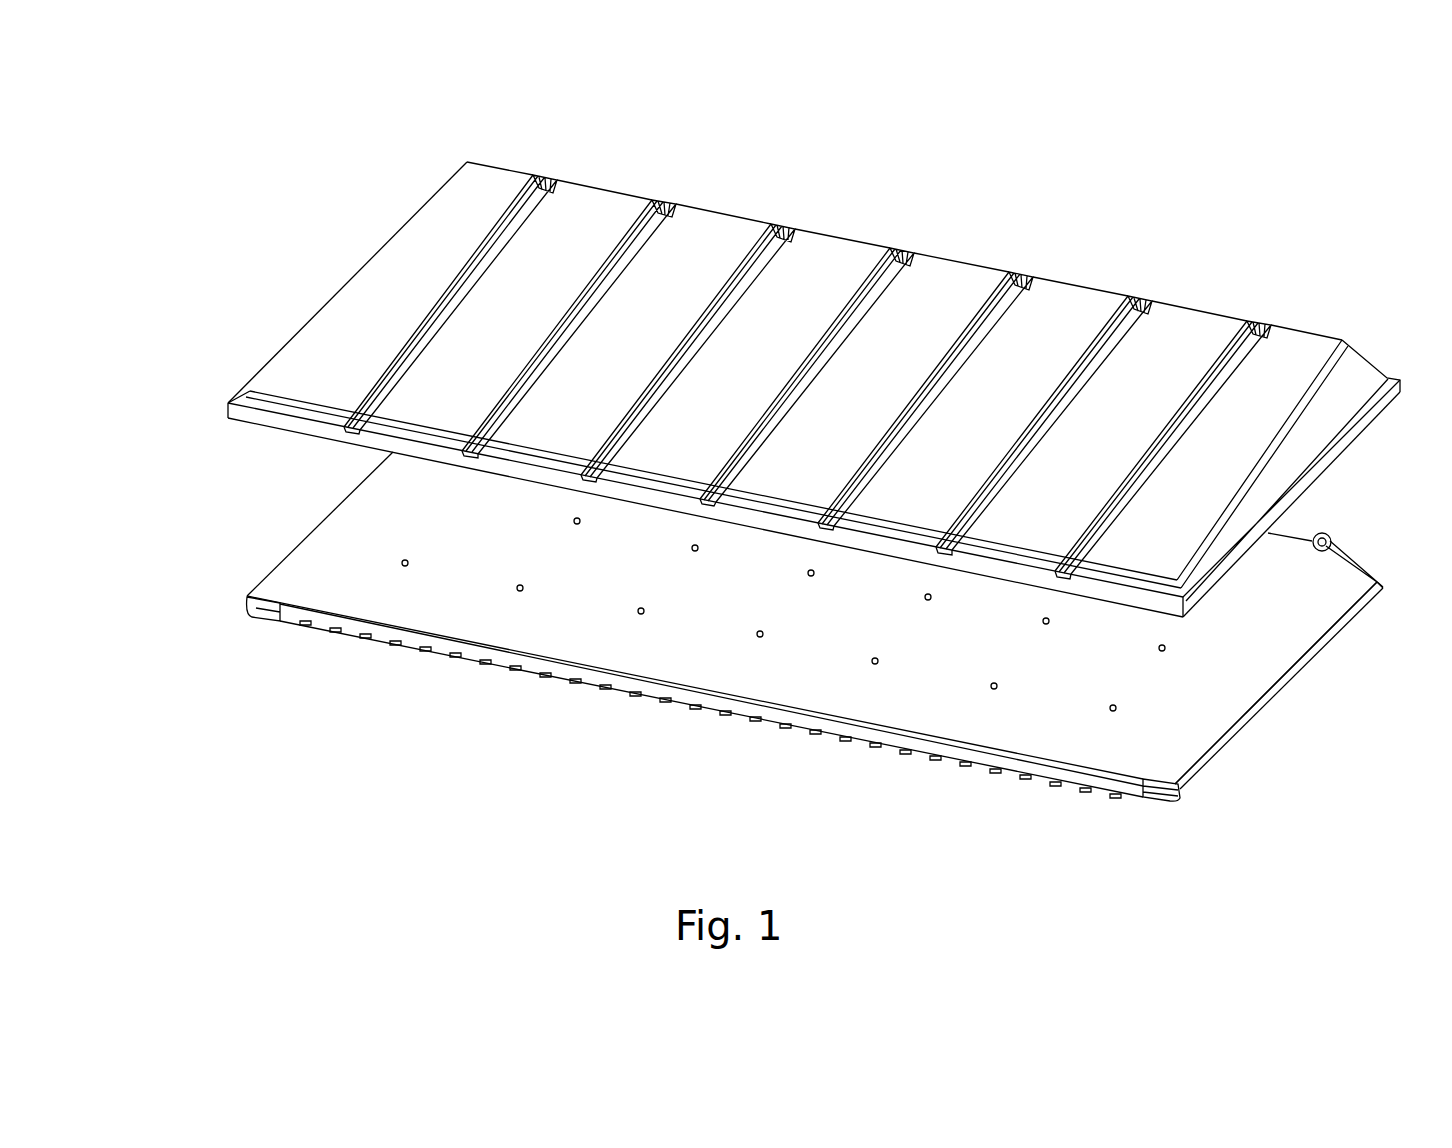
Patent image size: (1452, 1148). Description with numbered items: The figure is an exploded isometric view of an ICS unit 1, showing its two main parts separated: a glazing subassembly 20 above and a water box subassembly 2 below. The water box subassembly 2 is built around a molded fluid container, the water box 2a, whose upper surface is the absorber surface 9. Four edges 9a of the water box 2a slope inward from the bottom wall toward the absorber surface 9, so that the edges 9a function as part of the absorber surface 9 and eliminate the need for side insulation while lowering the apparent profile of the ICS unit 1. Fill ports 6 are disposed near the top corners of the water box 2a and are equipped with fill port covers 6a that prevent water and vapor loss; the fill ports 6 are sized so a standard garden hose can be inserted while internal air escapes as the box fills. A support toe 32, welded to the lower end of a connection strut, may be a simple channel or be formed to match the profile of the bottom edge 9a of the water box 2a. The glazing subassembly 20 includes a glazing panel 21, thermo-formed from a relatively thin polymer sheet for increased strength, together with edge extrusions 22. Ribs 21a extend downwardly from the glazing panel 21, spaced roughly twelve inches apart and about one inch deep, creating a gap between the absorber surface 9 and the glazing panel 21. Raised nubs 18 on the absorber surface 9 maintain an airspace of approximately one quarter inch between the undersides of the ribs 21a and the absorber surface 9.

The ICS unit 1 is at (330, 124).
The glazing subassembly 20 is at (778, 207).
The glazing panel 21 is at (930, 300).
The ribs 21a is at (537, 186).
The edge extrusions 22 is at (260, 420).
The fill ports 6 is at (1340, 552).
The fill port covers 6a is at (1325, 536).
The water box subassembly 2 is at (1312, 745).
The absorber surface 9 is at (565, 640).
The edges 9a is at (1302, 645).
The raised nubs 18 is at (404, 567).
The support toe 32 is at (958, 753).
The water box 2a is at (1150, 748).